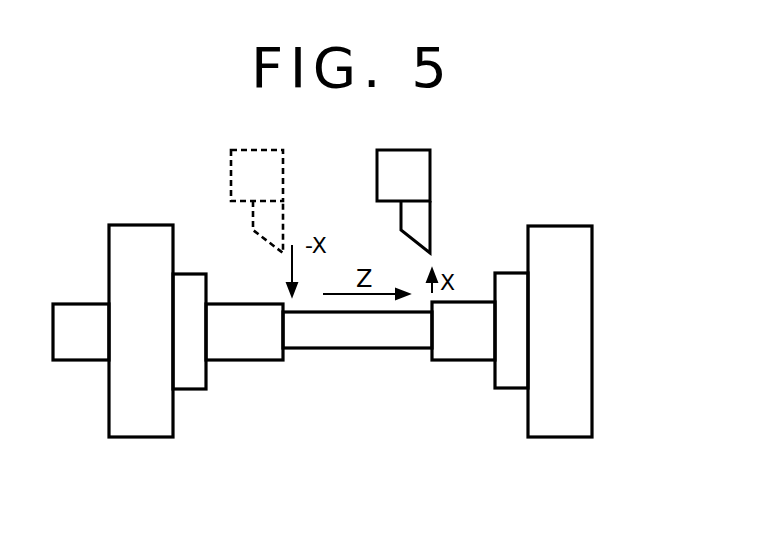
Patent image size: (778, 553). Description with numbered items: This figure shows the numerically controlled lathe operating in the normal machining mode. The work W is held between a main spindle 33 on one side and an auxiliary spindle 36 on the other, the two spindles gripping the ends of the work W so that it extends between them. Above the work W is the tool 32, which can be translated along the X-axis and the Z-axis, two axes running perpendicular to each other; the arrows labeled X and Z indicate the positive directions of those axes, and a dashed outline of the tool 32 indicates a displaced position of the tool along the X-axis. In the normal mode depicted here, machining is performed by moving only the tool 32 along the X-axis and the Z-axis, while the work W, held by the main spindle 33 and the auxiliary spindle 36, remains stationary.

The tool 32 is at (432, 231).
The main spindle 33 is at (149, 437).
The auxiliary spindle 36 is at (592, 338).
The work W is at (230, 360).